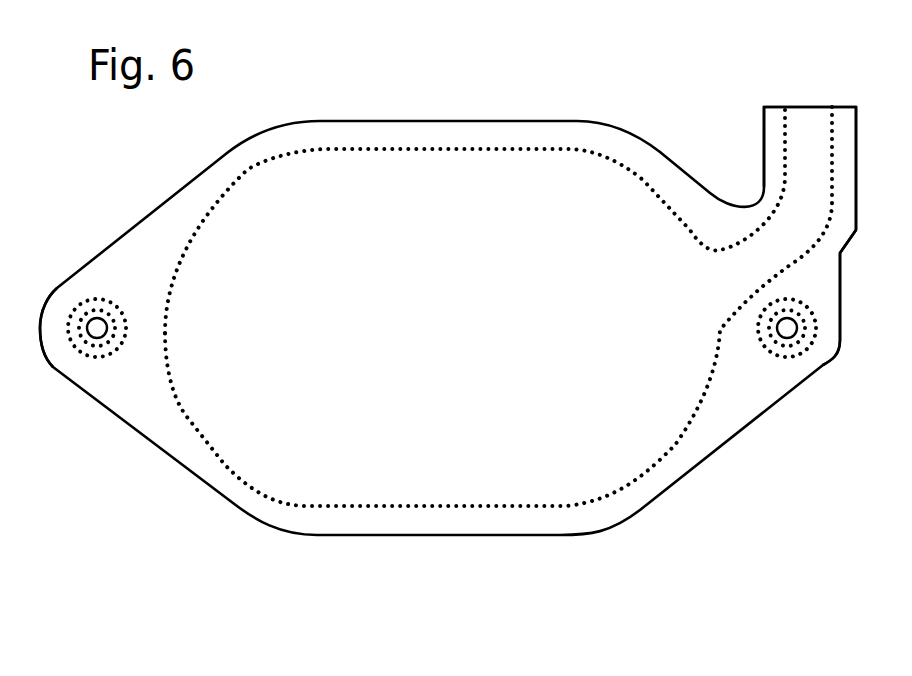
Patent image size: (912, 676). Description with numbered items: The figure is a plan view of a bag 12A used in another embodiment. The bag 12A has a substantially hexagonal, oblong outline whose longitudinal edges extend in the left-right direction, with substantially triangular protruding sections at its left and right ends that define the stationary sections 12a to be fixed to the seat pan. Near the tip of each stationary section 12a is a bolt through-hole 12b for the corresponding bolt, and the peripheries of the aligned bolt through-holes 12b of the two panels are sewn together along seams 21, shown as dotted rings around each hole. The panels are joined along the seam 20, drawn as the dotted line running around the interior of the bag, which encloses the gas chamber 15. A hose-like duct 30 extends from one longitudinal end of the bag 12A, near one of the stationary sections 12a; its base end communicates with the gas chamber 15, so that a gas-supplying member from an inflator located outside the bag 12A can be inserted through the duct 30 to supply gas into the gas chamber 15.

The bag 12A is at (597, 98).
The stationary section 12a is at (43, 307).
The bolt through-hole 12b is at (80, 333).
The gas chamber 15 is at (420, 372).
The seam 20 is at (435, 148).
The seam 21 is at (117, 307).
The duct 30 is at (808, 117).